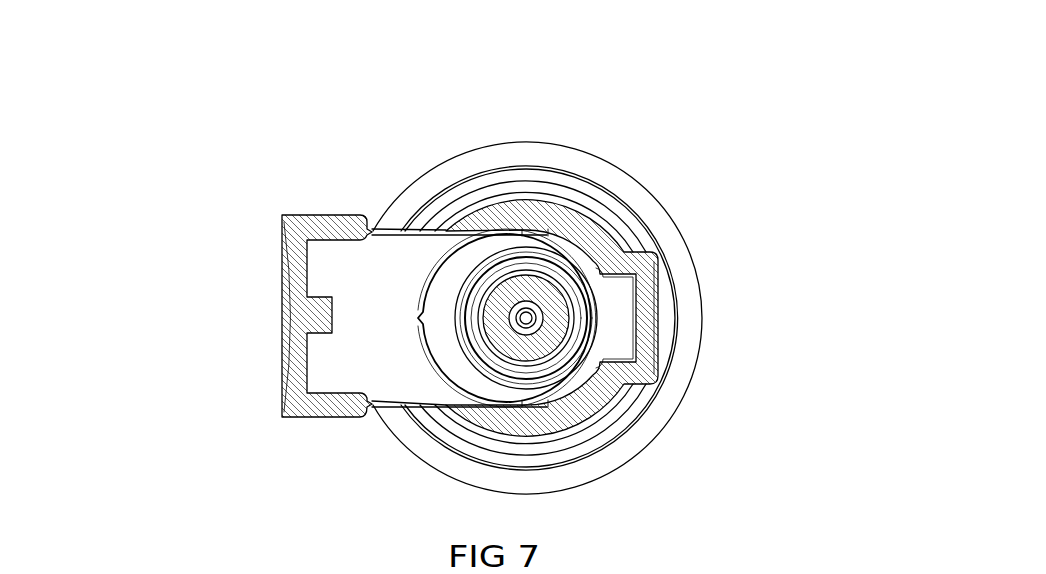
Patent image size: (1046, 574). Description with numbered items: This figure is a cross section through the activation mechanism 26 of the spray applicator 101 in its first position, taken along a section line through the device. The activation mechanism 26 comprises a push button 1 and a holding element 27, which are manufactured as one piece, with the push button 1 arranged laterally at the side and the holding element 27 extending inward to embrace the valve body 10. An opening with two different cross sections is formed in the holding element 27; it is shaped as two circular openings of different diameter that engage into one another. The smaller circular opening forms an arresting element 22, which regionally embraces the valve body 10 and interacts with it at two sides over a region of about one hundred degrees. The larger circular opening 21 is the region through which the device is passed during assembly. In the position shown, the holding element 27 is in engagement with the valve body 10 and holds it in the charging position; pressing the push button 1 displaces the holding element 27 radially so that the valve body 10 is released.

The push button 1 is at (278, 331).
The valve body 10 is at (572, 327).
The larger circular opening 21 is at (488, 390).
The arresting element 22 is at (572, 275).
The activation mechanism 26 is at (300, 316).
The holding element 27 is at (419, 255).
The spray applicator 101 is at (831, 136).